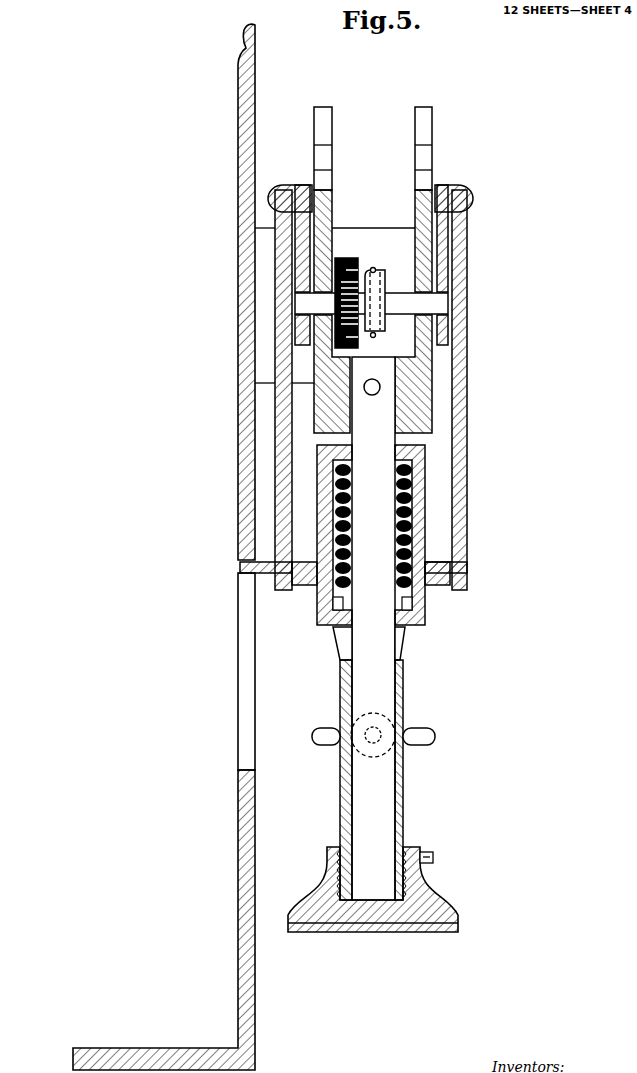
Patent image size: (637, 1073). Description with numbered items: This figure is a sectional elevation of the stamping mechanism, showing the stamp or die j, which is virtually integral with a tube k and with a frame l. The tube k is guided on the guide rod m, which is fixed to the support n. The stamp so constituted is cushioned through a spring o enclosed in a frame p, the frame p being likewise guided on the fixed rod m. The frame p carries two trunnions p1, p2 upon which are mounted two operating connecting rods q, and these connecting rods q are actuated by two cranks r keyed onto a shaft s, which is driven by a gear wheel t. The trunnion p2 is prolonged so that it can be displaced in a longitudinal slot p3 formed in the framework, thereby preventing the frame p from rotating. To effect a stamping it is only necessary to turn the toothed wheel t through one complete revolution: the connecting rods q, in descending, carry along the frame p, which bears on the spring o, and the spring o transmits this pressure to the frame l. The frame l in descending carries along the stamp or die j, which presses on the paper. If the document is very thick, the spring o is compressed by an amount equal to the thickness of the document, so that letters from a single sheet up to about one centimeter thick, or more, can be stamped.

The crank r is at (302, 190).
The gear wheel t is at (355, 266).
The shaft s is at (371, 303).
The support n is at (407, 366).
The connecting rod q is at (283, 433).
The guide rod m is at (373, 628).
The spring o is at (395, 539).
The frame p is at (378, 535).
The trunnion p1 is at (467, 567).
The trunnion p2 is at (240, 569).
The longitudinal slot p3 is at (238, 673).
The frame l is at (405, 652).
The tube k is at (403, 807).
The stamp or die j is at (320, 881).